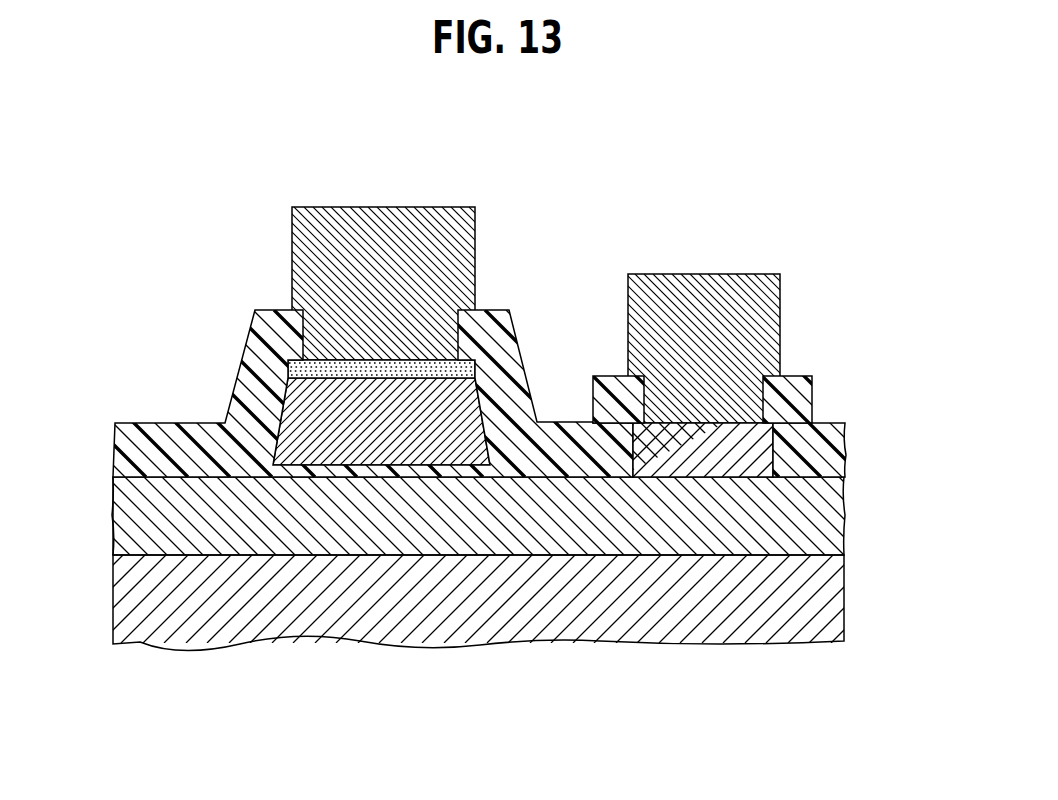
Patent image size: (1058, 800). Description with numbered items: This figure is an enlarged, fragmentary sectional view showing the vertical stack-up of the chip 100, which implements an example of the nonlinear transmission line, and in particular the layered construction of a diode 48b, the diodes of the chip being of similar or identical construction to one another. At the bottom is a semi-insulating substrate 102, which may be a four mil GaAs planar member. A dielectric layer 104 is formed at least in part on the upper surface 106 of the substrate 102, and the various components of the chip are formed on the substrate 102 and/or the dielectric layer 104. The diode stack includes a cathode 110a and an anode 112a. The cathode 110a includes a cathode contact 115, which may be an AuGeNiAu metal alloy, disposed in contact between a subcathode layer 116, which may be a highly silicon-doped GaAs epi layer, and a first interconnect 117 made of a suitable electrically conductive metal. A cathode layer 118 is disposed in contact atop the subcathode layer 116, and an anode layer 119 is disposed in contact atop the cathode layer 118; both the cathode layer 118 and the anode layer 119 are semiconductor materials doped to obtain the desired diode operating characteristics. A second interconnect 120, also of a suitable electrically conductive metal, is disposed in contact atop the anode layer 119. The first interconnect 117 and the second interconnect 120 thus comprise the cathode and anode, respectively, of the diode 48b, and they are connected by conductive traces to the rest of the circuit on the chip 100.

The chip 100 is at (505, 386).
The semi-insulating substrate 102 is at (333, 628).
The dielectric layer 104 is at (845, 447).
The upper surface 106 is at (135, 543).
The cathode 110a is at (505, 329).
The anode 112a is at (384, 288).
The cathode contact 115 is at (767, 440).
The subcathode layer 116 is at (842, 512).
The first interconnect 117 is at (652, 273).
The cathode layer 118 is at (747, 442).
The anode layer 119 is at (468, 363).
The second interconnect 120 is at (458, 207).
The diode 48b is at (97, 446).